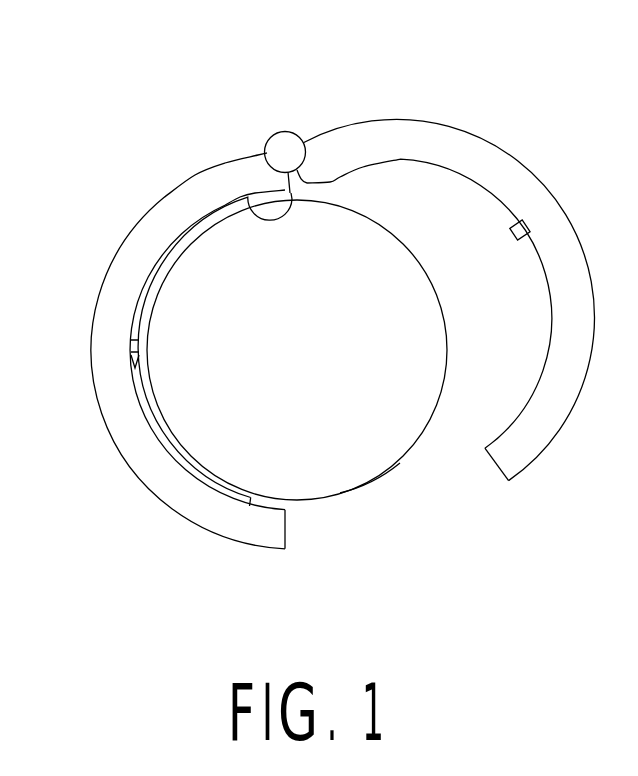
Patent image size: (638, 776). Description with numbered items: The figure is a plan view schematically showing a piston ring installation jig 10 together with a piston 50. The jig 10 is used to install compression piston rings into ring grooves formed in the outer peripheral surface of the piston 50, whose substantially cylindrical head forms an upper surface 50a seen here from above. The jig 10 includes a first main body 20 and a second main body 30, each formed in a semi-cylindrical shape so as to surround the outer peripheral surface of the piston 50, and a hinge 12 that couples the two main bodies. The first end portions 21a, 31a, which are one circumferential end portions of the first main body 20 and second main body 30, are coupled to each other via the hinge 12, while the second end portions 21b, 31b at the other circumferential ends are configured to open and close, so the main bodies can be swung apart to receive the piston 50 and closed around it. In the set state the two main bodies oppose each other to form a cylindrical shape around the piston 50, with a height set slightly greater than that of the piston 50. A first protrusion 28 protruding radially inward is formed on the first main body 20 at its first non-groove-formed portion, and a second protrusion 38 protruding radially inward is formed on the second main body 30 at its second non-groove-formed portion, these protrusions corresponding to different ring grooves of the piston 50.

The piston ring installation jig 10 is at (428, 97).
The hinge 12 is at (288, 131).
The first main body 20 is at (184, 181).
The first end portion 21a is at (244, 202).
The second end portion 21b is at (290, 523).
The first protrusion 28 is at (130, 372).
The second main body 30 is at (482, 138).
The first end portion 31a is at (320, 185).
The second end portion 31b is at (496, 479).
The second protrusion 38 is at (518, 243).
The piston 50 is at (384, 226).
The upper surface 50a is at (372, 464).